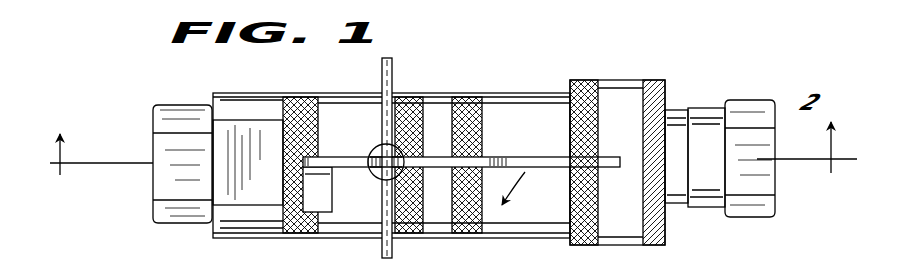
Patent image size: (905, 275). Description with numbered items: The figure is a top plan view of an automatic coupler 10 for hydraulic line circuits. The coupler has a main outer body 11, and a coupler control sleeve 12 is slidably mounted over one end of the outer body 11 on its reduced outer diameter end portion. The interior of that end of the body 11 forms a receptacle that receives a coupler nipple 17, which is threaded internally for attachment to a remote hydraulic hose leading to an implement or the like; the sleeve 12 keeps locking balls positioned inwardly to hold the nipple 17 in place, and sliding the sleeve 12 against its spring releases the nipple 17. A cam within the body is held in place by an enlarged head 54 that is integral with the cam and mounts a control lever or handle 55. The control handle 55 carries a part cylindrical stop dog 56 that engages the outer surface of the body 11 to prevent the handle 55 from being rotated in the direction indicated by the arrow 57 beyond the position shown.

The automatic coupler 10 is at (432, 93).
The main outer body 11 is at (527, 93).
The coupler control sleeve 12 is at (655, 82).
The coupler nipple 17 is at (708, 108).
The enlarged head 54 is at (372, 148).
The control handle 55 is at (512, 157).
The stop dog 56 is at (313, 187).
The arrow 57 is at (522, 188).